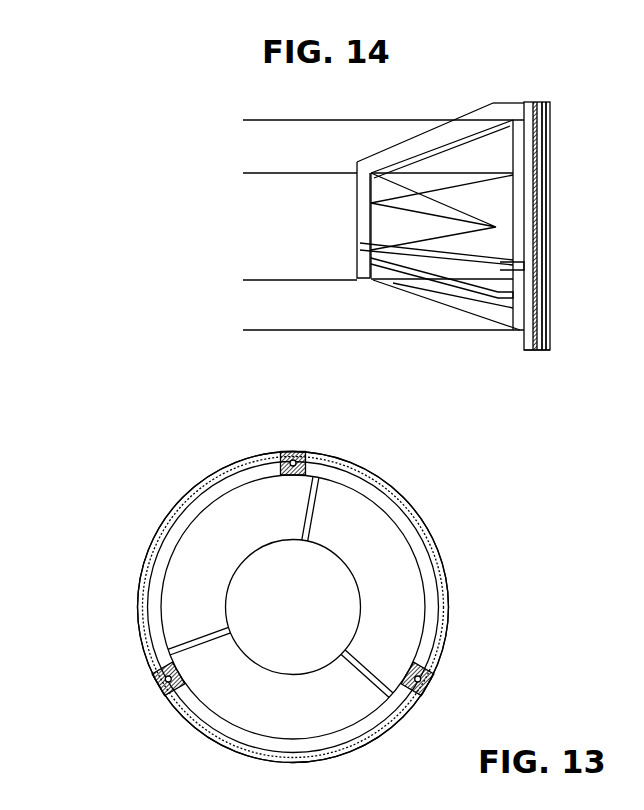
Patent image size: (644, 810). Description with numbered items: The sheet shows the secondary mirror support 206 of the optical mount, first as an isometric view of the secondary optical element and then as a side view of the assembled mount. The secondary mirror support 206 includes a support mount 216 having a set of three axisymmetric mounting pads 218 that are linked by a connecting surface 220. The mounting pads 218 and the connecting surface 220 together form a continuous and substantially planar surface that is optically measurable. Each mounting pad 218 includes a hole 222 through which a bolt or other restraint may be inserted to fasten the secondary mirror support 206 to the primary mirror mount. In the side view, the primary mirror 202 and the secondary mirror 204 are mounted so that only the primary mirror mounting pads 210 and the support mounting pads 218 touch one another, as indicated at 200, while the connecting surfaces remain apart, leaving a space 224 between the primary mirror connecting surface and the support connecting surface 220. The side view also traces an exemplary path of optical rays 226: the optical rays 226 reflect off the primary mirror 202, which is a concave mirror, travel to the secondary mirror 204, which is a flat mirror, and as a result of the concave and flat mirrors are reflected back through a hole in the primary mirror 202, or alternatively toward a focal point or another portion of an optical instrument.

In FIG. 14, the contact location 200 is at (537, 98).
In FIG. 14, the primary mirror 202 is at (539, 177).
In FIG. 14, the secondary mirror 204 is at (357, 222).
In FIG. 13, the secondary mirror 204 is at (283, 587).
In FIG. 14, the secondary mirror support 206 is at (405, 153).
In FIG. 13, the secondary mirror support 206 is at (318, 478).
In FIG. 14, the primary mirror mounting pads 210 is at (541, 104).
In FIG. 13, the support mount 216 is at (398, 487).
In FIG. 14, the mounting pads 218 is at (525, 103).
In FIG. 13, the mounting pads 218 is at (281, 455).
In FIG. 13, the connecting surface 220 is at (445, 572).
In FIG. 13, the hole 222 is at (295, 457).
In FIG. 14, the space 224 is at (538, 356).
In FIG. 14, the optical rays 226 is at (263, 120).